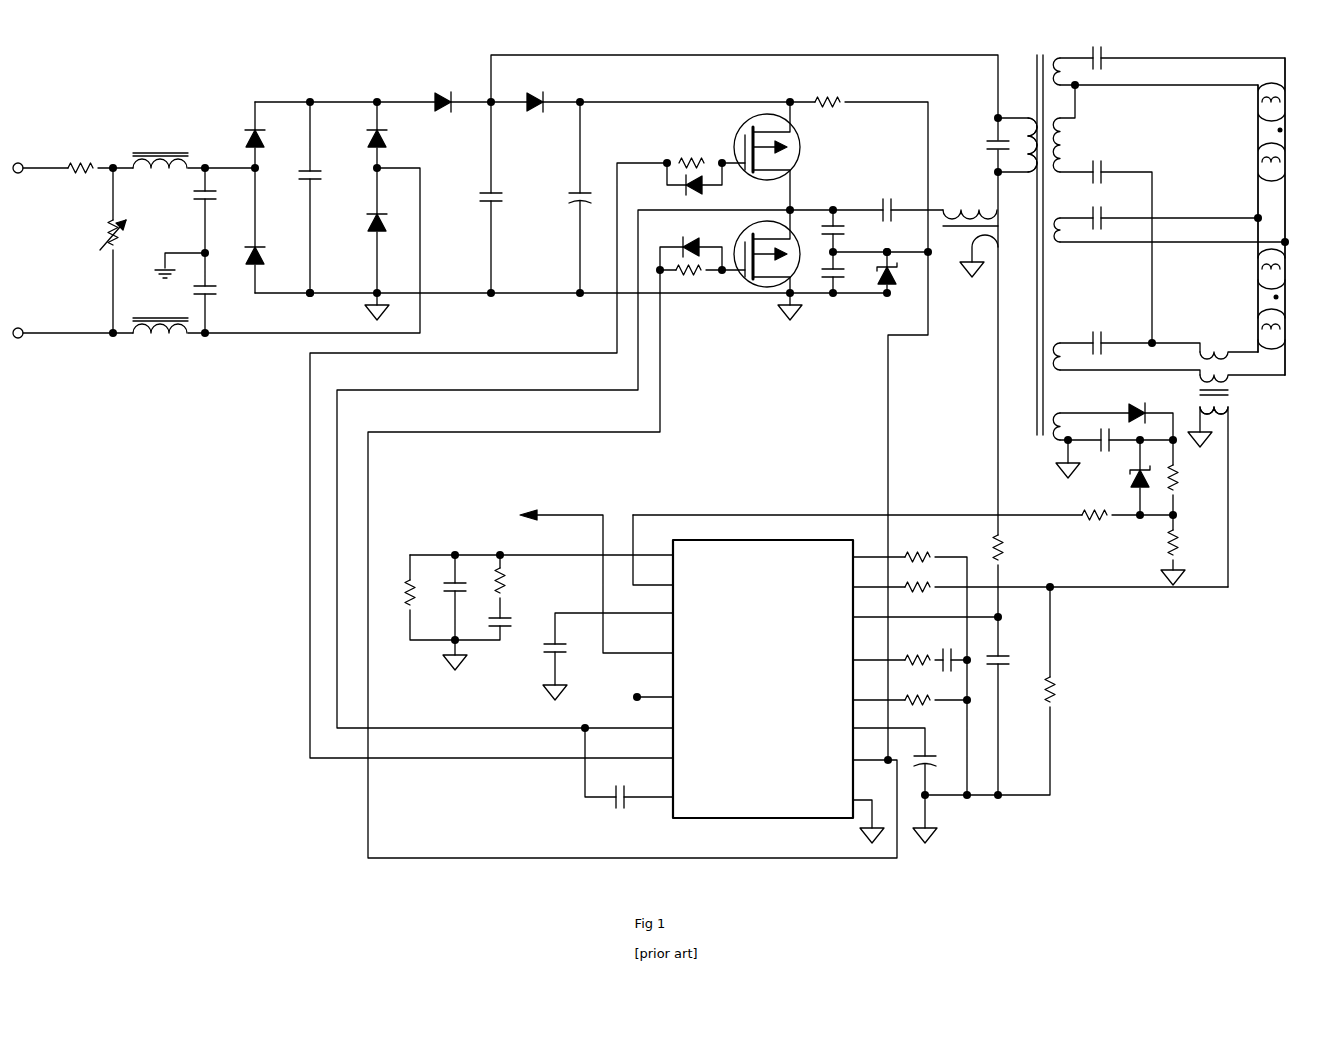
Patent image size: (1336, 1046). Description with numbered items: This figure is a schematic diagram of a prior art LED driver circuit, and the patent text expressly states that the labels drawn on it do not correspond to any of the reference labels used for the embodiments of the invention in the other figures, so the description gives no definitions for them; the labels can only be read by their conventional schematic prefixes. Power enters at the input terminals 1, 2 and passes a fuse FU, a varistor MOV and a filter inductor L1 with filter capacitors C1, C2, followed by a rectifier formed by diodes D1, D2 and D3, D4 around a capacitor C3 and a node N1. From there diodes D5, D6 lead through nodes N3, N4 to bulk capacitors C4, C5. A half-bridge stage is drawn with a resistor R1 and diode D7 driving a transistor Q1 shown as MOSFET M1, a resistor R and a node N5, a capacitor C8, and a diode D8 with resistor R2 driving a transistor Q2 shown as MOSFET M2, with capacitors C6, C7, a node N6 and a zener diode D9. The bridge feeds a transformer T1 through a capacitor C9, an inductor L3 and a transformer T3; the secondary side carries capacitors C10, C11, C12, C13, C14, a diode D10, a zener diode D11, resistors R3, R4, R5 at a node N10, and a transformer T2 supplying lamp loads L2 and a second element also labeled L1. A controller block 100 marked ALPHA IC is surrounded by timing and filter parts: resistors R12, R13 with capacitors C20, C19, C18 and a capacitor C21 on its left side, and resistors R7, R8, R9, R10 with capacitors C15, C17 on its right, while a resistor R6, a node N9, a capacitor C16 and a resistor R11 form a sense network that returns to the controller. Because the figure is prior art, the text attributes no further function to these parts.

The input terminal 1 is at (18, 156).
The input terminal 2 is at (18, 323).
The fuse FU is at (80, 156).
The inductor / lamp L1 is at (1301, 129).
The metal oxide varistor MOV is at (90, 250).
The capacitor C1 is at (217, 196).
The capacitor C2 is at (217, 291).
The diode D1 is at (269, 138).
The diode D2 is at (269, 255).
The capacitor C3 is at (326, 176).
The diode D3 is at (390, 138).
The diode D4 is at (390, 222).
The node N1 is at (308, 296).
The diode D5 is at (441, 89).
The diode D6 is at (535, 89).
The node N3 is at (494, 103).
The node N4 is at (583, 100).
The capacitor C4 is at (505, 199).
The capacitor C5 is at (592, 199).
The resistor R1 is at (691, 153).
The diode D7 is at (726, 190).
The transistor Q1 is at (743, 131).
The MOSFET M1 is at (785, 156).
The resistor R is at (827, 91).
The node N5 is at (803, 201).
The capacitor C8 is at (887, 200).
The diode D8 is at (693, 240).
The transistor Q2 is at (744, 238).
The MOSFET M2 is at (785, 257).
The resistor R2 is at (694, 286).
The capacitor C6 is at (822, 230).
The node N6 is at (877, 244).
The zener diode D9 is at (900, 281).
The capacitor C7 is at (822, 274).
The transformer T1 is at (1022, 134).
The capacitor C9 is at (986, 146).
The inductor L3 is at (970, 208).
The transformer T3 is at (979, 271).
The capacitor C10 is at (1115, 61).
The capacitor C11 is at (1100, 162).
The capacitor C12 is at (1115, 218).
The capacitor C13 is at (1079, 337).
The capacitor C14 is at (1090, 437).
The diode D10 is at (1136, 403).
The zener diode D11 is at (1122, 477).
The resistor R3 is at (1186, 477).
The node N10 is at (1191, 517).
The resistor R5 is at (1094, 530).
The resistor R4 is at (1186, 542).
The transformer T2 is at (1226, 402).
The lamp L2 is at (1289, 296).
The resistor R12 is at (395, 592).
The resistor R13 is at (520, 580).
The capacitor C20 is at (445, 607).
The capacitor C19 is at (522, 623).
The capacitor C18 is at (573, 653).
The capacitor C21 is at (620, 812).
The resistor R7 is at (917, 548).
The resistor R8 is at (927, 579).
The resistor R9 is at (917, 649).
The capacitor C15 is at (948, 649).
The resistor R10 is at (919, 690).
The capacitor C17 is at (941, 762).
The resistor R6 is at (1009, 547).
The node N9 is at (1010, 618).
The capacitor C16 is at (1013, 662).
The resistor R11 is at (1067, 689).
The ALPHA IC controller 100 is at (775, 820).